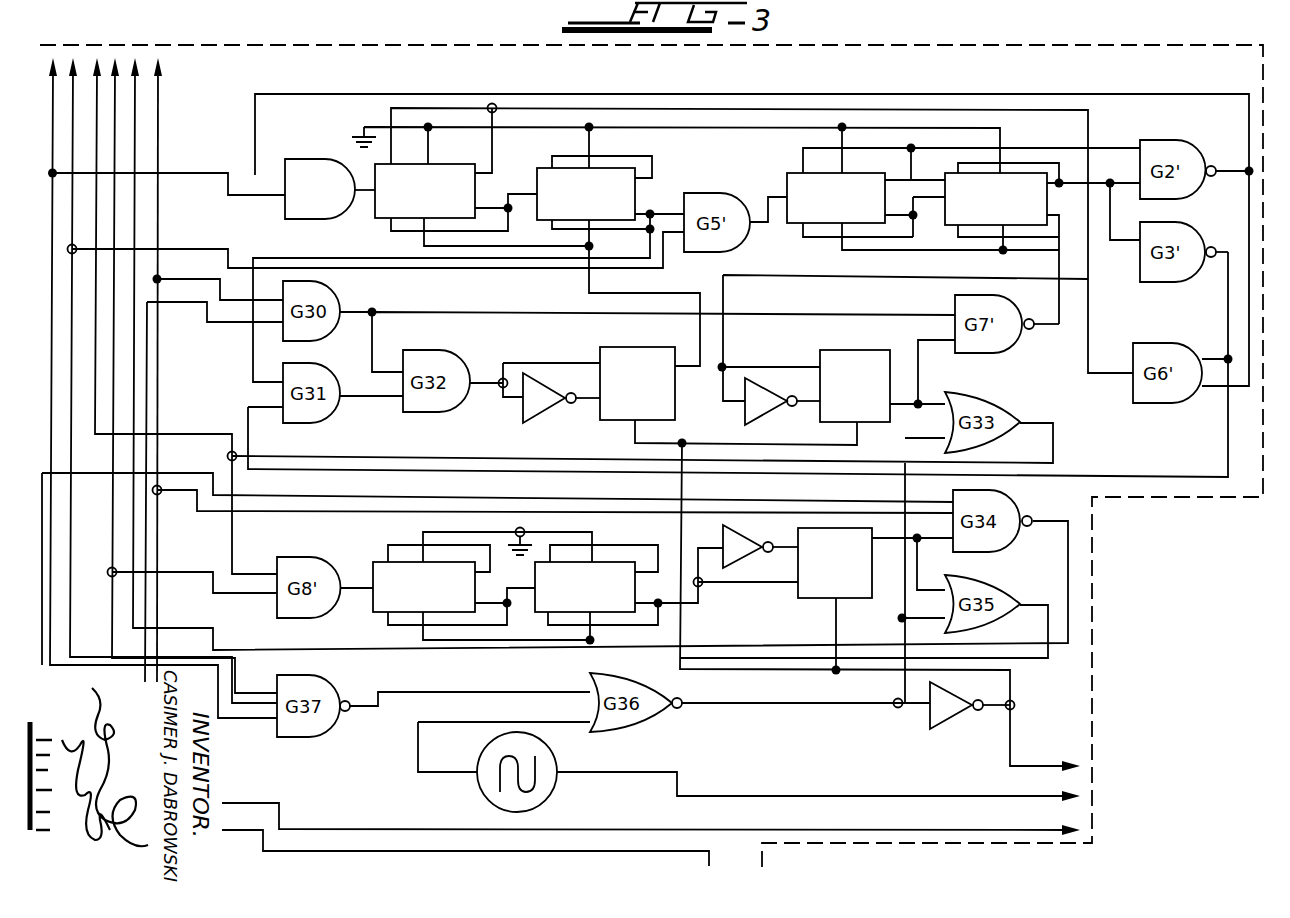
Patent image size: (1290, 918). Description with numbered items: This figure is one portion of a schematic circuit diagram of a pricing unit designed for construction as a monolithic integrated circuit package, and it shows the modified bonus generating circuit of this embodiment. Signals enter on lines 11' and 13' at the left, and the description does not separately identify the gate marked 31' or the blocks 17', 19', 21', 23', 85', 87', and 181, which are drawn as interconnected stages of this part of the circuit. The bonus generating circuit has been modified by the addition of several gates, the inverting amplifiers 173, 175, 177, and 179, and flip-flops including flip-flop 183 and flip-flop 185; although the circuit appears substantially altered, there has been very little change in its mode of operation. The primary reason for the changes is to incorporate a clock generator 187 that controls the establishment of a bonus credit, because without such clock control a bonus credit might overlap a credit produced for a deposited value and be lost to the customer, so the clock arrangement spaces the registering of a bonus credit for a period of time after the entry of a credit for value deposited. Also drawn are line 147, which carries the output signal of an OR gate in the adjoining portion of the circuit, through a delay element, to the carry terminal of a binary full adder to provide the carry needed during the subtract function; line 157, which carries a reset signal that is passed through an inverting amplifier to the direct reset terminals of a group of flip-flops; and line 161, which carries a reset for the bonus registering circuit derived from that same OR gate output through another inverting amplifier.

The input line 11' is at (166, 394).
The input line 13' is at (376, 386).
The gate G1' 31' is at (323, 173).
The flip-flop 17' is at (482, 205).
The flip-flop 19' is at (468, 269).
The flip-flop 21' is at (836, 198).
The flip-flop 23' is at (1042, 243).
The flip-flop 85' is at (484, 586).
The flip-flop 87' is at (666, 585).
The flip-flop 181 is at (728, 397).
The flip-flop 183 is at (887, 381).
The flip-flop 185 is at (875, 563).
The inverting amplifier 173 is at (566, 407).
The inverting amplifier 175 is at (787, 407).
The inverting amplifier 177 is at (976, 716).
The inverting amplifier 179 is at (753, 572).
The clock generator 187 is at (478, 786).
The line 147 is at (476, 854).
The reset signal line 157 is at (158, 553).
The bonus registering circuit reset line 161 is at (190, 469).